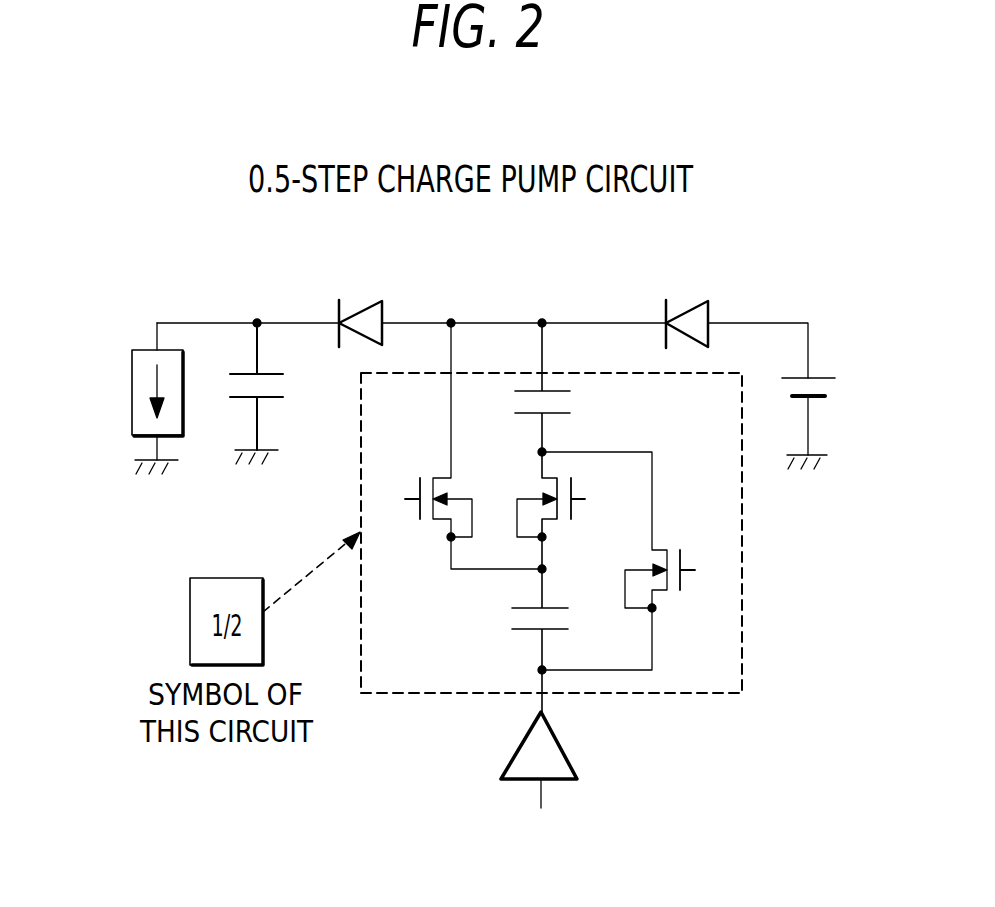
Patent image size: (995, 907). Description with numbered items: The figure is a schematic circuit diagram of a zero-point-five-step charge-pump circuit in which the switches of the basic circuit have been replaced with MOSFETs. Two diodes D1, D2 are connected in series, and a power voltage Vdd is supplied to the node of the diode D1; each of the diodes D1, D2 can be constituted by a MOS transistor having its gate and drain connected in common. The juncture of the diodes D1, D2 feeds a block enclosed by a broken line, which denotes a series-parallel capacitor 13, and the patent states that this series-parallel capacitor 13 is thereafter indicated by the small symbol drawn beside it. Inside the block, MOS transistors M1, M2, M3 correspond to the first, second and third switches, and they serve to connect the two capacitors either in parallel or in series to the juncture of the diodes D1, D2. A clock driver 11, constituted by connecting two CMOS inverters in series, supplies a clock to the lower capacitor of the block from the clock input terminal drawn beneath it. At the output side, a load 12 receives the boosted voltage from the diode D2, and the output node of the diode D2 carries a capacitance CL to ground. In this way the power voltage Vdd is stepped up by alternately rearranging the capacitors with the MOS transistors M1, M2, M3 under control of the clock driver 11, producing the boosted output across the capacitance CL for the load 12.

The clock driver 11 is at (572, 762).
The load 12 is at (132, 393).
The series-parallel capacitor 13 is at (585, 517).
The diode D1 is at (702, 302).
The diode D2 is at (376, 301).
The MOS transistor M1 is at (428, 478).
The MOS transistor M2 is at (565, 522).
The MOS transistor M3 is at (680, 550).
The capacitance CL is at (277, 393).
The power voltage Vdd is at (828, 423).